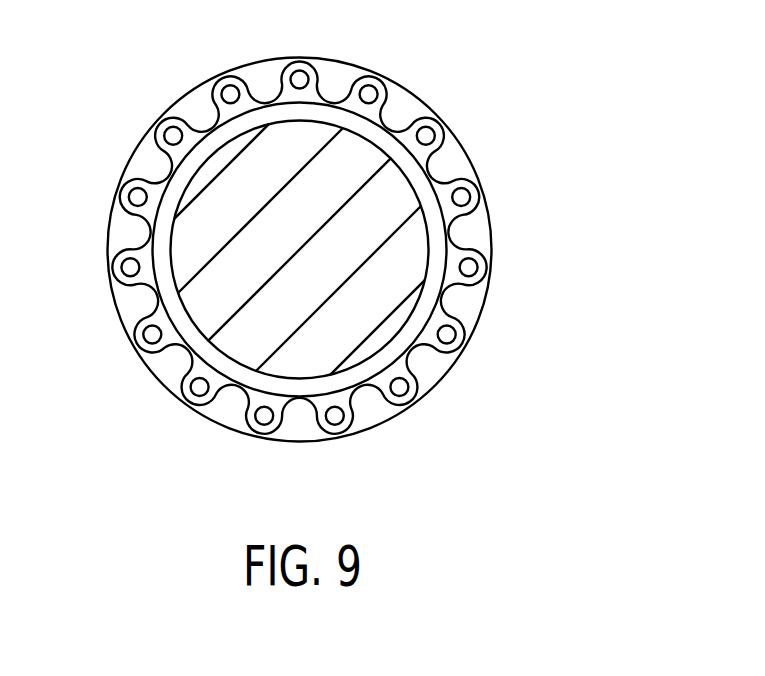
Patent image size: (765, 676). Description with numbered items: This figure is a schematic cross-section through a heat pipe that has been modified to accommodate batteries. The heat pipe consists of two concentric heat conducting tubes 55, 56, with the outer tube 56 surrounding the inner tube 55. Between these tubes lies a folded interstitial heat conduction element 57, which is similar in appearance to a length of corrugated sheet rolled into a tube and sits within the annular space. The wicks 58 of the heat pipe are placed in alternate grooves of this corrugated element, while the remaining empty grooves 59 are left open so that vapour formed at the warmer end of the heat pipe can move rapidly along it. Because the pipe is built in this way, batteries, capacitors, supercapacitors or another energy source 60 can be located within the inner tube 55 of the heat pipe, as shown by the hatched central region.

The inner heat conducting tube 55 is at (357, 265).
The outer heat conducting tube 56 is at (490, 312).
The folded interstitial heat conduction element 57 is at (222, 412).
The wicks 58 is at (466, 197).
The empty grooves 59 is at (402, 113).
The energy source 60 is at (237, 283).